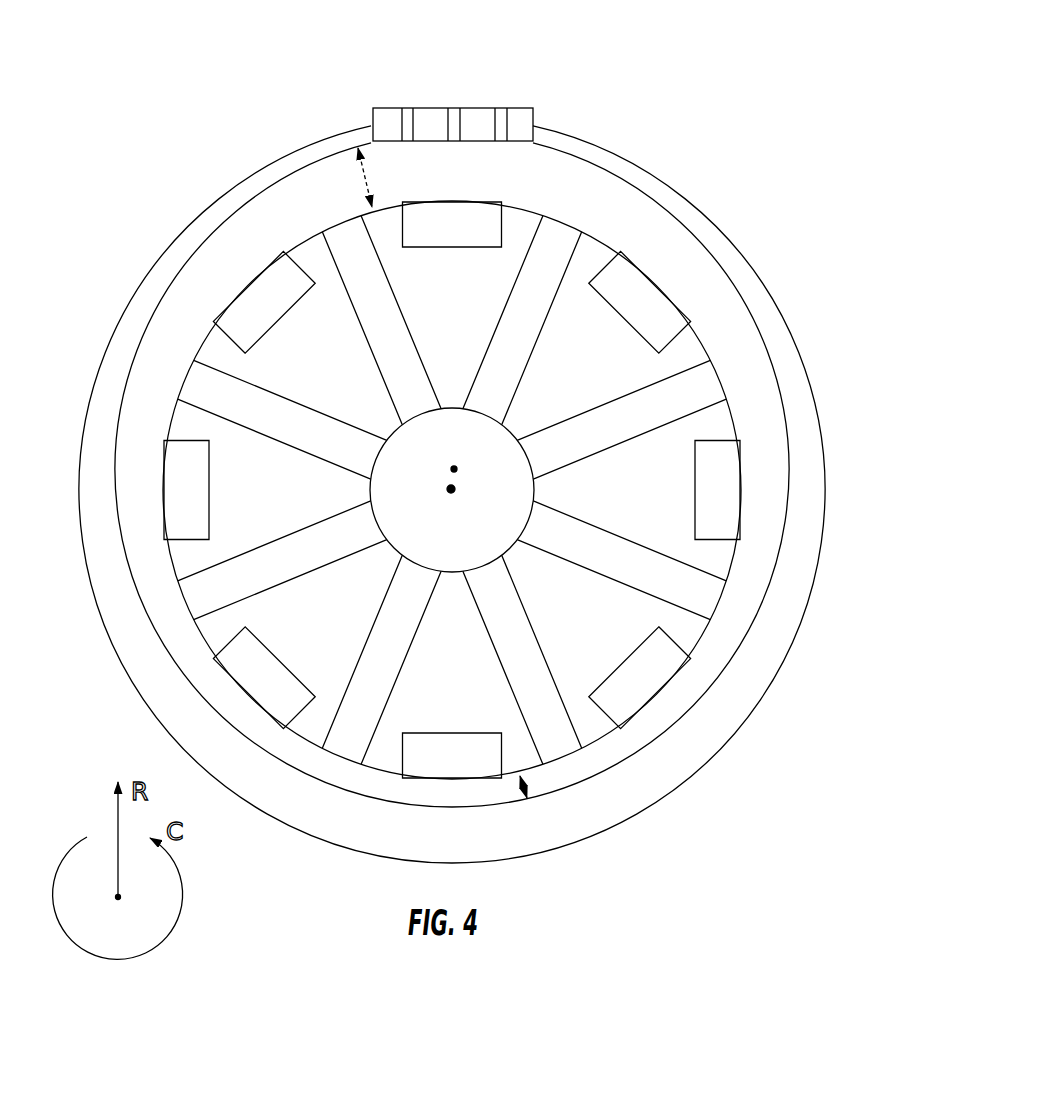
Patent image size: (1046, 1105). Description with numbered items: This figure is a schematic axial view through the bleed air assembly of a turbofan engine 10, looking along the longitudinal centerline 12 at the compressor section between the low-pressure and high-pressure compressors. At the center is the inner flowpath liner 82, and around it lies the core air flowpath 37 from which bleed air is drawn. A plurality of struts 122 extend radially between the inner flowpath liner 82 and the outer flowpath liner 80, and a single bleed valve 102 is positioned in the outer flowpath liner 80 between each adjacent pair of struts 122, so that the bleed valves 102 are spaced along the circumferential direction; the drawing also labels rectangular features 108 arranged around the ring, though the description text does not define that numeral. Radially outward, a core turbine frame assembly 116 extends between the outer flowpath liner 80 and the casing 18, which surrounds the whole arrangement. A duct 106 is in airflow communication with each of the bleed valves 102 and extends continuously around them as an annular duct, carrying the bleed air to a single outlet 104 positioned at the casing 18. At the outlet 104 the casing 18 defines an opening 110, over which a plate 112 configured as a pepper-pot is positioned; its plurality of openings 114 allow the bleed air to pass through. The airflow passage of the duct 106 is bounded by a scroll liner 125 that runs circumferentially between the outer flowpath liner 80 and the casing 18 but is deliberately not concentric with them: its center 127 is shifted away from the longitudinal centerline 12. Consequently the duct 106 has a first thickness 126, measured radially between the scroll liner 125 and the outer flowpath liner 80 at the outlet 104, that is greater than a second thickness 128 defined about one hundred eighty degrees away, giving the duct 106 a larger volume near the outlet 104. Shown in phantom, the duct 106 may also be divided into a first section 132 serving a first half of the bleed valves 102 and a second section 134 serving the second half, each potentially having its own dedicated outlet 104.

The turbofan engine 10 is at (703, 70).
The longitudinal centerline 12 is at (454, 488).
The casing 18 is at (222, 196).
The core air flowpath 37 is at (459, 346).
The outer flowpath liner 80 is at (193, 388).
The inner flowpath liner 82 is at (385, 540).
The bleed valve 102 is at (678, 302).
The outlet 104 is at (507, 92).
The duct 106 is at (593, 203).
The inserts 108 is at (627, 312).
The opening 110 is at (388, 120).
The plate 112 is at (533, 108).
The openings 114 is at (456, 120).
The core turbine frame assembly 116 is at (752, 243).
The struts 122 is at (355, 250).
The scroll liner 125 is at (120, 398).
The first thickness 126 is at (358, 148).
The center 127 is at (446, 462).
The second thickness 128 is at (527, 798).
The first section 132 is at (782, 358).
The second section 134 is at (668, 765).